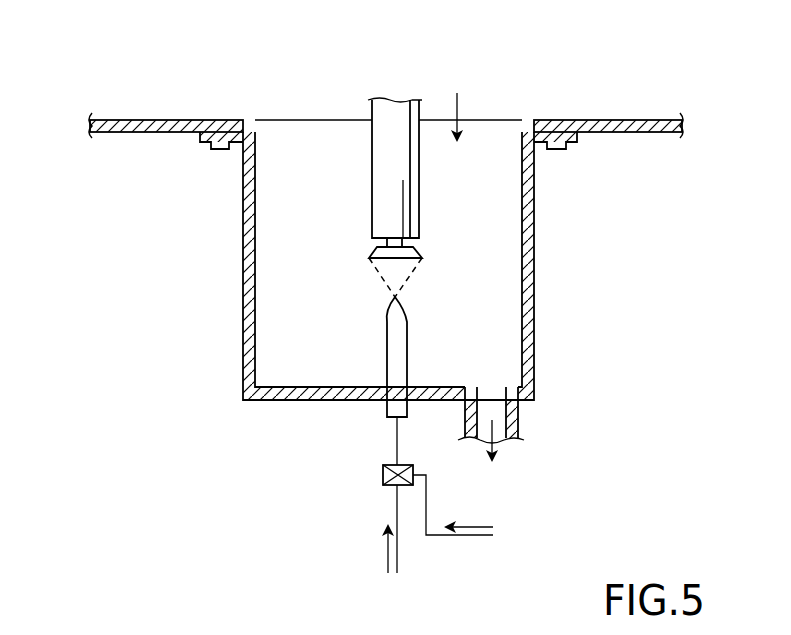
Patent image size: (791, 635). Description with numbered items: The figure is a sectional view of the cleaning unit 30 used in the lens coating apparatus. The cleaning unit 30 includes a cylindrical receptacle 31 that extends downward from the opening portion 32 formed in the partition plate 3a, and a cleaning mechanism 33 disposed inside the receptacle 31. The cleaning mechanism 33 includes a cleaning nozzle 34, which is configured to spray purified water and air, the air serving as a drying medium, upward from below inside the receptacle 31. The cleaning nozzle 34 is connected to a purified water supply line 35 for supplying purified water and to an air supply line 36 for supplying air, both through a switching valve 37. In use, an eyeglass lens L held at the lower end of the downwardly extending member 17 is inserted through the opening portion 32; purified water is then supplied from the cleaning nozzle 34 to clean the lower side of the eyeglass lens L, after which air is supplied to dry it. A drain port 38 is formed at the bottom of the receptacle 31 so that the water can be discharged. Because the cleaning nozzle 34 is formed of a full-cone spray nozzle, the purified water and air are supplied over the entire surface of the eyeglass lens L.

The partition plate 3a is at (151, 121).
The cleaning unit 30 is at (381, 314).
The cylindrical receptacle 31 is at (243, 217).
The opening portion 32 is at (300, 130).
The cleaning mechanism 33 is at (446, 300).
The pipe 17 is at (372, 190).
The eyeglass lens L is at (369, 258).
The cleaning nozzle 34 is at (387, 333).
The purified water supply line 35 is at (397, 500).
The air supply line 36 is at (426, 490).
The switching valve 37 is at (383, 470).
The drain port 38 is at (518, 411).